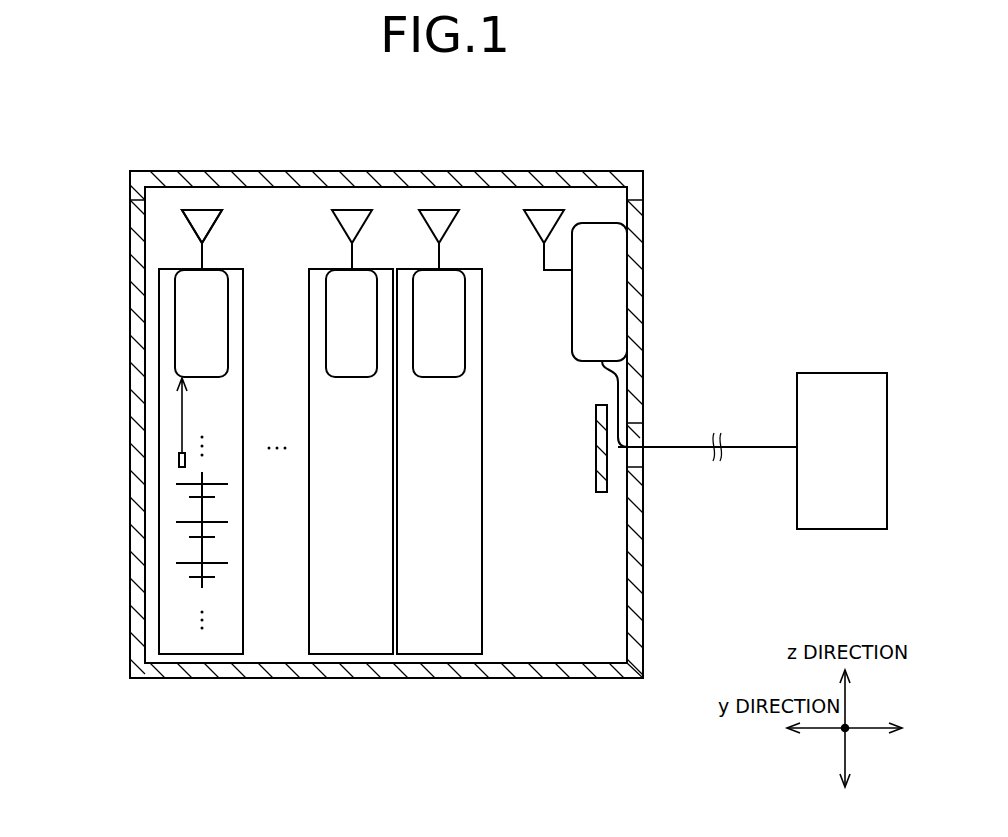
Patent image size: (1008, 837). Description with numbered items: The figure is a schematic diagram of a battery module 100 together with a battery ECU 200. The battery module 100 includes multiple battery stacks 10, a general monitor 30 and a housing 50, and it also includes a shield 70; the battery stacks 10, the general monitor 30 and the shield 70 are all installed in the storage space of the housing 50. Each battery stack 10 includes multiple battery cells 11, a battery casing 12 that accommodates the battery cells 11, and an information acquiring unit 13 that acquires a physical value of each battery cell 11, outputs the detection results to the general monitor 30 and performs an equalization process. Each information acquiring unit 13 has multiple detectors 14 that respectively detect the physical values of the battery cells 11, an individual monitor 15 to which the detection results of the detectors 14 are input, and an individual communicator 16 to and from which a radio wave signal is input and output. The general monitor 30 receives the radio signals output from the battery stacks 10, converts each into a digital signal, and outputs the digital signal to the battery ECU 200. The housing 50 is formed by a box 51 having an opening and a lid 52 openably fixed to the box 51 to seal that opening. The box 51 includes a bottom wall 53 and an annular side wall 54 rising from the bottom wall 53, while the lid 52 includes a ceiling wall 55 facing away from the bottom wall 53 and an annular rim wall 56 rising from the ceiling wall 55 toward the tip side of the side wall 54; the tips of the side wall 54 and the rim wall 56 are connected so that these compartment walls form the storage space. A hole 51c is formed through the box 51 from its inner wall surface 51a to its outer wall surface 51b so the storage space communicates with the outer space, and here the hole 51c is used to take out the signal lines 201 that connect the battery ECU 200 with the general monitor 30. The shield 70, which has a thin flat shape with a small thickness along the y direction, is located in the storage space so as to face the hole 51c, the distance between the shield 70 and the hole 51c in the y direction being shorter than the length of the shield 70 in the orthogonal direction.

The battery module 100 is at (651, 159).
The battery stack 10 is at (204, 200).
The battery cell 11 is at (185, 563).
The battery casing 12 is at (159, 643).
The information acquiring unit 13 is at (68, 212).
The detector 14 is at (179, 460).
The individual monitor 15 is at (175, 353).
The individual communicator 16 is at (193, 234).
The general monitor 30 is at (578, 200).
The housing 50 is at (708, 175).
The box 51 is at (643, 253).
The inner wall surface 51a is at (627, 578).
The outer wall surface 51b is at (643, 550).
The hole 51c is at (637, 465).
The lid 52 is at (643, 188).
The bottom wall 53 is at (535, 680).
The side wall 54 is at (644, 641).
The ceiling wall 55 is at (161, 171).
The rim wall 56 is at (130, 187).
The shield 70 is at (601, 492).
The battery ECU 200 is at (840, 373).
The signal lines 201 is at (666, 447).